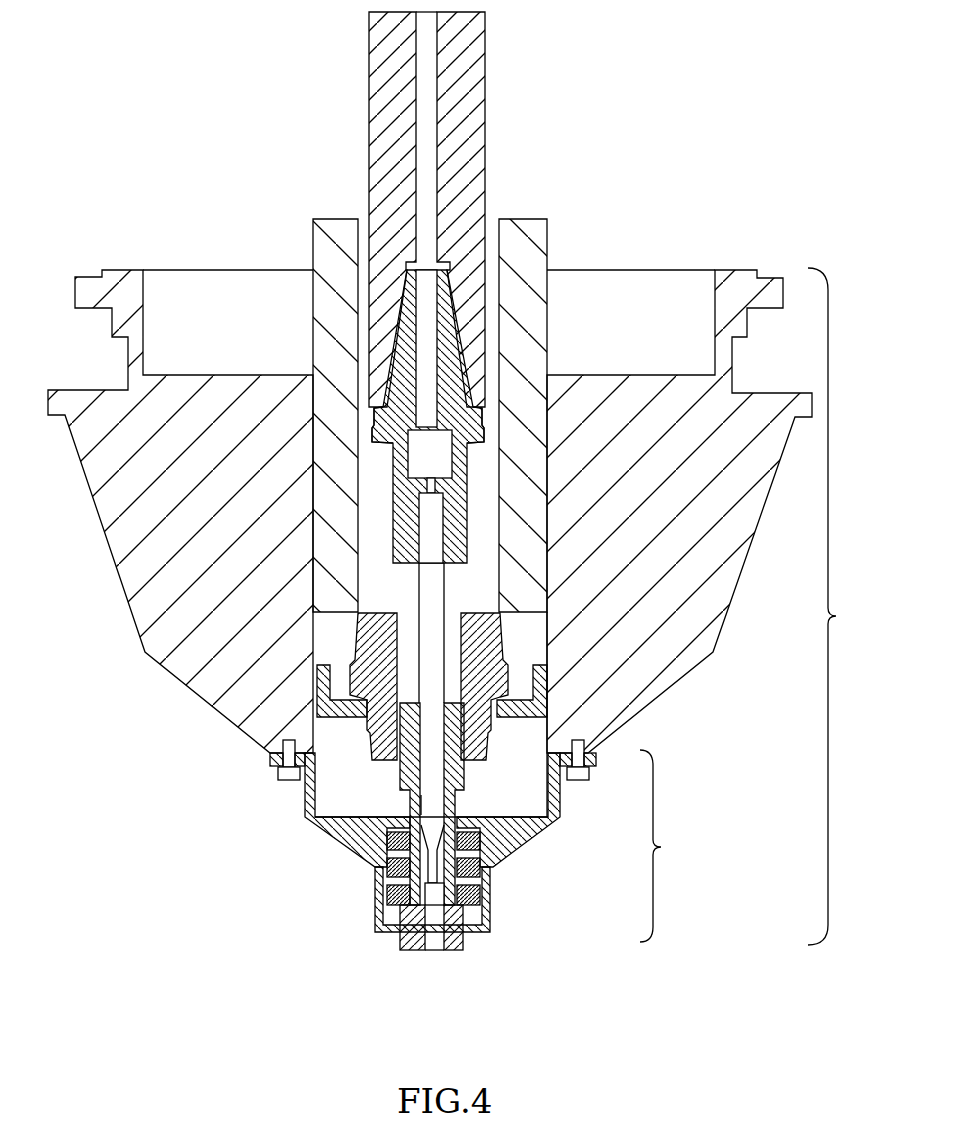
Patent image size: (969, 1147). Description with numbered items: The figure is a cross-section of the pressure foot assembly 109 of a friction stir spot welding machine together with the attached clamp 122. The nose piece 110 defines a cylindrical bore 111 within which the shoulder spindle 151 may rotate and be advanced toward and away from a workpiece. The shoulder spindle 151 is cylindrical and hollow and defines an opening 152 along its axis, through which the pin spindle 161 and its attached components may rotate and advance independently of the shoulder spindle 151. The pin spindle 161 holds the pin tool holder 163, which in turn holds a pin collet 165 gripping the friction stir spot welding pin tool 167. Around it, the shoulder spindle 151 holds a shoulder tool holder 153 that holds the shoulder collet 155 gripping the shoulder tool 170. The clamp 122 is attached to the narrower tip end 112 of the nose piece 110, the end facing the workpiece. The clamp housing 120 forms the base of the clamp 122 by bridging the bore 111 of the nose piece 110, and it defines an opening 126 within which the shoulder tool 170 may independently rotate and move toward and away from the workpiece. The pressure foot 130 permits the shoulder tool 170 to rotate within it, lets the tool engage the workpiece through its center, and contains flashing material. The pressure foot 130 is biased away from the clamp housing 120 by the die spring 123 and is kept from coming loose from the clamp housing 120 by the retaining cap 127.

The pressure foot assembly 109 is at (848, 606).
The nose piece 110 is at (745, 560).
The cylindrical bore 111 is at (391, 493).
The narrower tip end 112 is at (252, 751).
The clamp housing 120 is at (338, 843).
The clamp 122 is at (675, 846).
The die spring 123 is at (368, 840).
The opening 126 is at (398, 809).
The retaining cap 127 is at (492, 882).
The pressure foot 130 is at (450, 948).
The shoulder spindle 151 is at (546, 237).
The opening 152 is at (323, 350).
The shoulder tool holder 153 is at (500, 740).
The shoulder collet 155 is at (458, 805).
The pin spindle 161 is at (487, 137).
The pin tool holder 163 is at (377, 467).
The pin collet 165 is at (417, 563).
The pin tool 167 is at (443, 612).
The shoulder tool 170 is at (542, 832).